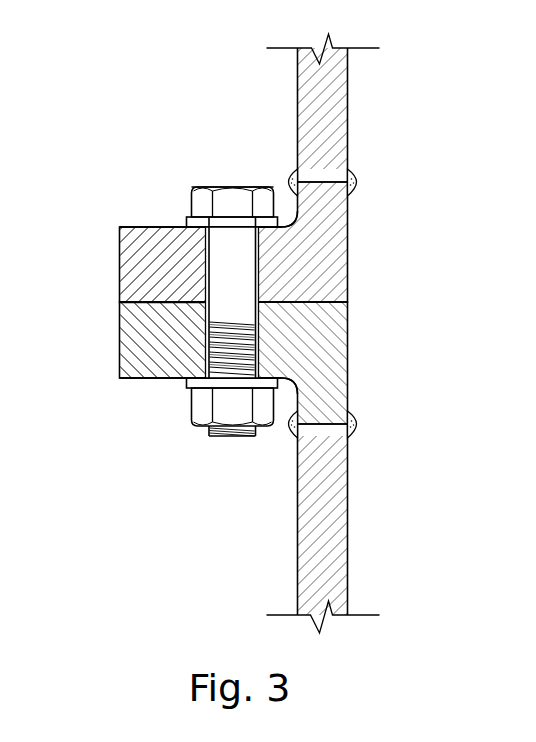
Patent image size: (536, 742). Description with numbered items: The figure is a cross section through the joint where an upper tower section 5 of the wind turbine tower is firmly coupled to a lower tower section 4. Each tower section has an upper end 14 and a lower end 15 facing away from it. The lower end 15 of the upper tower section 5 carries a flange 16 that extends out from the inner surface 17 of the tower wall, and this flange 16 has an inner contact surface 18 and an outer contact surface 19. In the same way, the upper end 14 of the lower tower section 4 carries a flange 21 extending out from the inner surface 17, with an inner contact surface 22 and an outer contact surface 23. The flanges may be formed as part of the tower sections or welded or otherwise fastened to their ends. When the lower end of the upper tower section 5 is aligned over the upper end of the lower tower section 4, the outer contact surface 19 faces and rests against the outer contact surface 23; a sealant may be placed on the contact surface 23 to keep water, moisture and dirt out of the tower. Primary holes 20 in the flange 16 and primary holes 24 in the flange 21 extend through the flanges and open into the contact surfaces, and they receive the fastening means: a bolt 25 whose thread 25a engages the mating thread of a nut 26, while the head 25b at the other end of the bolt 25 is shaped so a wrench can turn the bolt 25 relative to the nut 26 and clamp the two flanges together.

The lower tower section 4 is at (342, 490).
The upper tower section 5 is at (340, 232).
The upper end 14 is at (126, 396).
The lower end 15 is at (117, 210).
The flange 16 is at (137, 248).
The inner surface 17 is at (298, 92).
The inner contact surface 18 is at (160, 228).
The outer contact surface 19 is at (150, 300).
The primary holes 20 is at (262, 270).
The flange 21 is at (133, 358).
The inner contact surface 22 is at (168, 380).
The outer contact surface 23 is at (159, 307).
The primary holes 24 is at (262, 330).
The bolt 25 is at (245, 184).
The thread 25a is at (263, 436).
The head 25b is at (223, 193).
The nut 26 is at (205, 428).